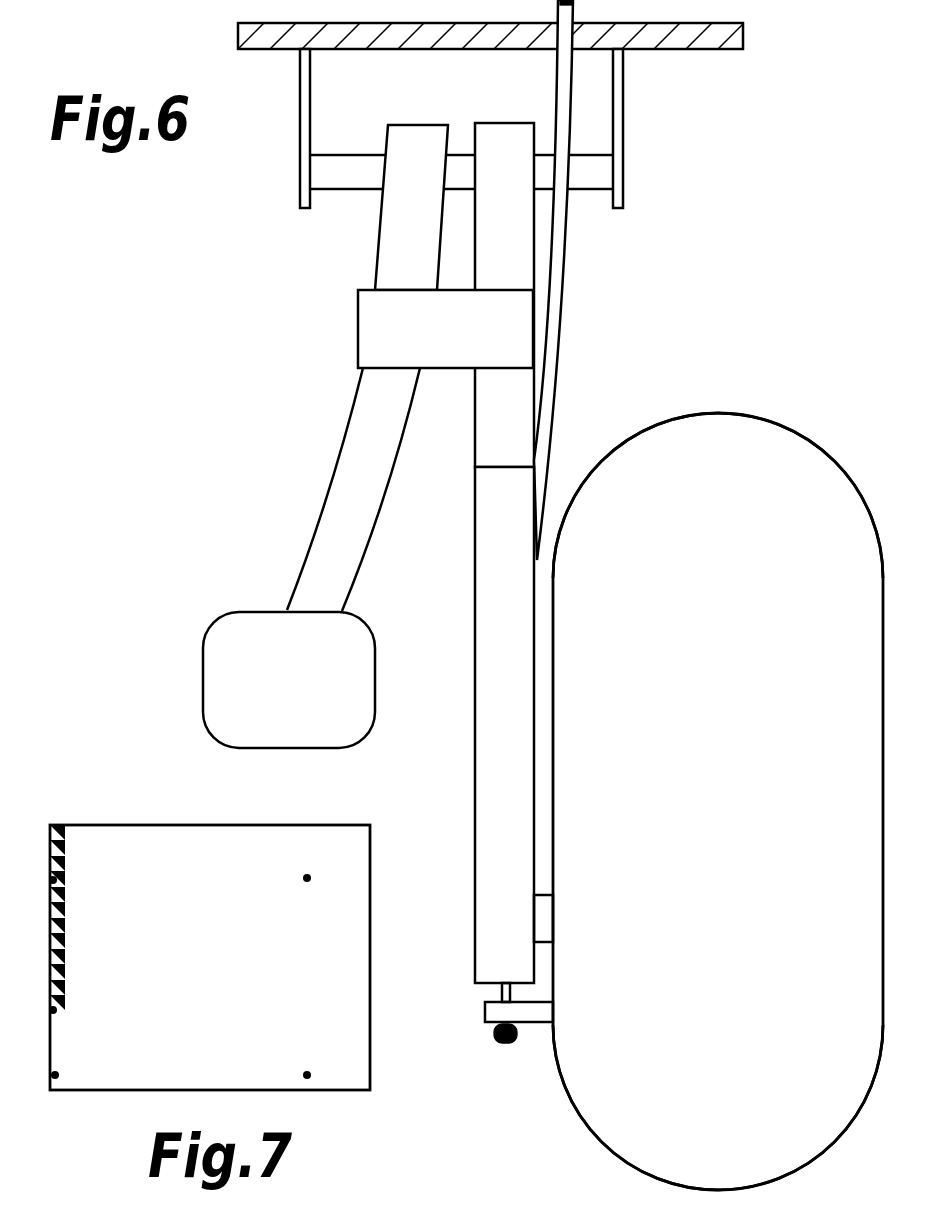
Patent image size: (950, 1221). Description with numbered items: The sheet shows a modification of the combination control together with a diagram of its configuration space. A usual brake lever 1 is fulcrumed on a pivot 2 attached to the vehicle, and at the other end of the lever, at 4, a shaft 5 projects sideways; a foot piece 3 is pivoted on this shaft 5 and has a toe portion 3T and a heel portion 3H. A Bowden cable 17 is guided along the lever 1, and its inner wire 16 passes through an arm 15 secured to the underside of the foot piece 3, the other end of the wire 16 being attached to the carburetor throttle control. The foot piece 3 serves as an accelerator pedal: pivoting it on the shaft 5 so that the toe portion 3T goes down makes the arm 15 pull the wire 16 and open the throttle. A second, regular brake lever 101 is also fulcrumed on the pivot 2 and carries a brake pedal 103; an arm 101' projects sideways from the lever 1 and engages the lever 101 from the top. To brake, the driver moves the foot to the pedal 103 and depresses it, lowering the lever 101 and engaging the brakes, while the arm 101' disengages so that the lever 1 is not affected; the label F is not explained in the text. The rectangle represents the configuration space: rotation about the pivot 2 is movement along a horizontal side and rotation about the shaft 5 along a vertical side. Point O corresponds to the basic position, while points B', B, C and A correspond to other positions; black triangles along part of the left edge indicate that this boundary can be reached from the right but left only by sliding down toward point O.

In FIG. 6, the floor / vehicle body panel F is at (660, 38).
In FIG. 6, the pivot 2 is at (583, 170).
In FIG. 6, the Bowden cable 17 is at (553, 335).
In FIG. 6, the arm 101' is at (445, 329).
In FIG. 6, the brake lever 101 is at (322, 368).
In FIG. 6, the brake lever 1 is at (504, 295).
In FIG. 6, the brake pedal 103 is at (289, 680).
In FIG. 6, the end of lever 4 is at (504, 725).
In FIG. 6, the foot piece 3 is at (718, 801).
In FIG. 6, the toe portion 3T is at (718, 500).
In FIG. 6, the heel portion 3H is at (718, 1107).
In FIG. 6, the shaft 5 is at (545, 917).
In FIG. 6, the inner wire 16 is at (502, 992).
In FIG. 6, the arm 15 is at (538, 1012).
In FIG. 7, the point A is at (39, 877).
In FIG. 7, the point O is at (40, 1010).
In FIG. 7, the point B' is at (38, 1072).
In FIG. 7, the point C is at (316, 890).
In FIG. 7, the point B is at (319, 1060).